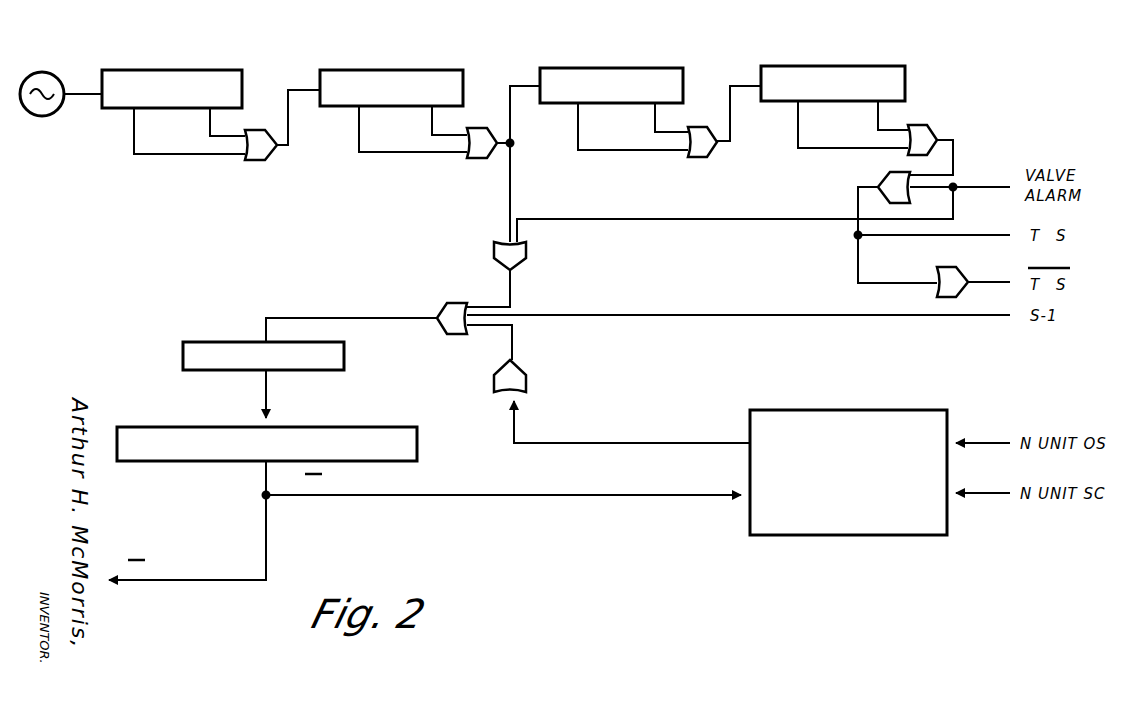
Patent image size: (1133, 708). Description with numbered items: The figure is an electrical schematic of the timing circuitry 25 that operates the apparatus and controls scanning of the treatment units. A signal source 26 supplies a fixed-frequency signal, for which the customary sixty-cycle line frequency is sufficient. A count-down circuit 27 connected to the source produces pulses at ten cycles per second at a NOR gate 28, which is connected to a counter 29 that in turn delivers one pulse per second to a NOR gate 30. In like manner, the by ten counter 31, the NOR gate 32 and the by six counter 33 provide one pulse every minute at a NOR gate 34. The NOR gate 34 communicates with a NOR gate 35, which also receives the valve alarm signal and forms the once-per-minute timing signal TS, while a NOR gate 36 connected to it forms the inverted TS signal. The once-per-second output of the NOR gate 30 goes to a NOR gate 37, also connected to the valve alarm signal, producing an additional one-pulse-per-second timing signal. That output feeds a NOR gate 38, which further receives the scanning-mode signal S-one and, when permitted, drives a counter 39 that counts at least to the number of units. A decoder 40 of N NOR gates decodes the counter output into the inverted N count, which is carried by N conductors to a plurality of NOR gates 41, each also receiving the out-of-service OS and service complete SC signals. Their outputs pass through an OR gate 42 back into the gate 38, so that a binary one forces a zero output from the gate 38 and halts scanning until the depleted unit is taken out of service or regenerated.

The timing circuitry 25 is at (408, 544).
The signal source 26 is at (42, 72).
The count-down circuit 27 is at (165, 70).
The NOR gate 28 is at (257, 162).
The counter 29 is at (392, 70).
The NOR gate 30 is at (482, 160).
The by ten counter 31 is at (617, 68).
The NOR gate 32 is at (697, 158).
The by six counter 33 is at (833, 66).
The NOR gate 34 is at (919, 125).
The NOR gate 35 is at (888, 172).
The NOR gate 36 is at (948, 267).
The NOR gate 37 is at (527, 252).
The NOR gate 38 is at (455, 303).
The counter 39 is at (345, 355).
The decoder 40 is at (418, 441).
The NOR gates 41 is at (852, 410).
The OR gate 42 is at (527, 383).